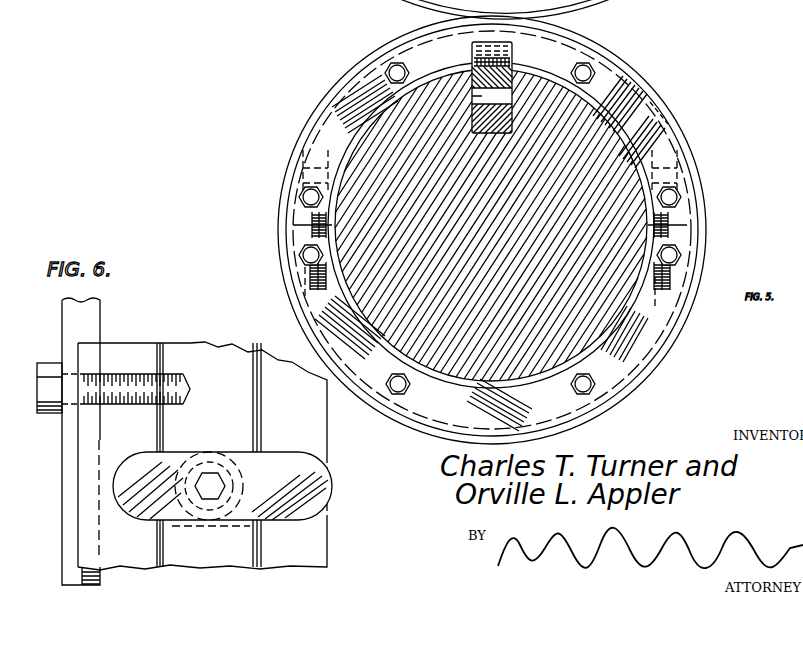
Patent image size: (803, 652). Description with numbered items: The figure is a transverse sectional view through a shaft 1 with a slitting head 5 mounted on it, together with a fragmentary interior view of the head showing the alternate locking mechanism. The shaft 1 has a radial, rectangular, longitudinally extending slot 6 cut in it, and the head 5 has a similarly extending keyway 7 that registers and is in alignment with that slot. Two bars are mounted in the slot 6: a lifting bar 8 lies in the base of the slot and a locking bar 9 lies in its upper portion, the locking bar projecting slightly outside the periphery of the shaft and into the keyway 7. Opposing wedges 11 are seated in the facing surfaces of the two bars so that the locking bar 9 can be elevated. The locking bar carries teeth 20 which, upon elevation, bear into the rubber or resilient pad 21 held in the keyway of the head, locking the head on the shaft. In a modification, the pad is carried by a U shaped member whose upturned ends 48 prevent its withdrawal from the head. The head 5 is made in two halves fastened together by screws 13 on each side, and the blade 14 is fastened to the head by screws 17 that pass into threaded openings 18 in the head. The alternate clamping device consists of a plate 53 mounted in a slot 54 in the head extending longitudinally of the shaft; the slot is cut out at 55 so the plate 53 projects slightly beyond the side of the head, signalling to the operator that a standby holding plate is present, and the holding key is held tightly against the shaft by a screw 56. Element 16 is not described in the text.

In FIG. 5, the shaft 1 is at (372, 143).
In FIG. 5, the head 5 is at (600, 77).
In FIG. 6, the head 5 is at (328, 537).
In FIG. 5, the slot 6 is at (473, 125).
In FIG. 5, the keyway 7 is at (472, 60).
In FIG. 5, the lifting bar 8 is at (473, 112).
In FIG. 5, the locking bar 9 is at (513, 72).
In FIG. 5, the wedges 11 is at (478, 96).
In FIG. 5, the screws 13 is at (305, 270).
In FIG. 5, the blade 14 is at (290, 172).
In FIG. 6, the blade 14 is at (103, 312).
In FIG. 5, the ring flange 16 is at (327, 151).
In FIG. 6, the ring flange 16 is at (80, 433).
In FIG. 5, the screws 17 is at (607, 63).
In FIG. 6, the screws 17 is at (48, 363).
In FIG. 5, the threaded openings 18 is at (385, 63).
In FIG. 6, the threaded openings 18 is at (120, 370).
In FIG. 5, the teeth 20 is at (513, 63).
In FIG. 5, the rubber or resilient pad 21 is at (460, 60).
In FIG. 5, the upturned ends 48 is at (514, 45).
In FIG. 5, the plate 53 is at (607, 110).
In FIG. 6, the plate 53 is at (332, 480).
In FIG. 6, the slot 54 is at (275, 452).
In FIG. 5, the cut out 55 is at (623, 120).
In FIG. 6, the cut out 55 is at (327, 505).
In FIG. 5, the screw 56 is at (660, 108).
In FIG. 6, the screw 56 is at (207, 470).